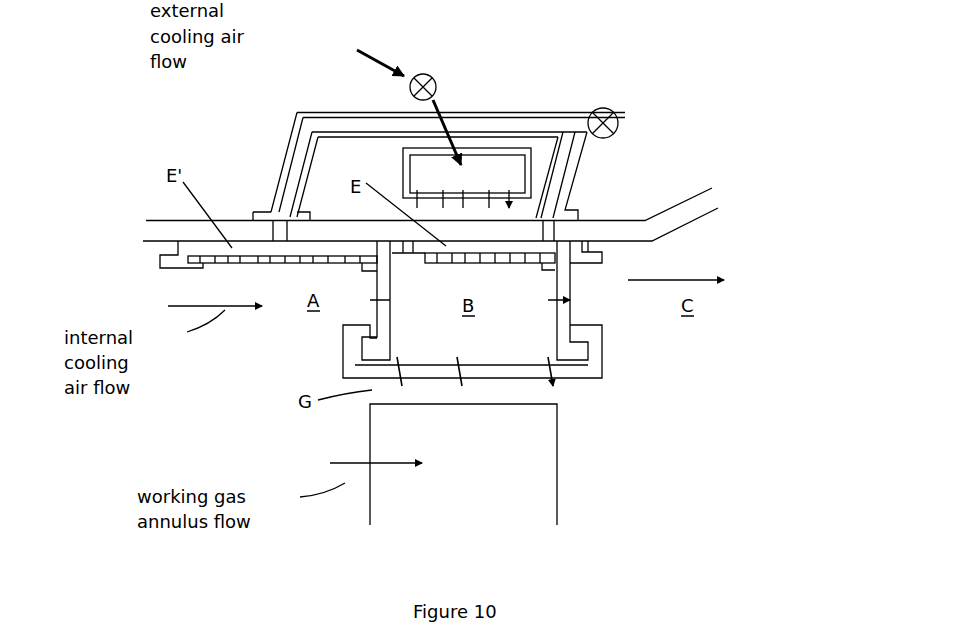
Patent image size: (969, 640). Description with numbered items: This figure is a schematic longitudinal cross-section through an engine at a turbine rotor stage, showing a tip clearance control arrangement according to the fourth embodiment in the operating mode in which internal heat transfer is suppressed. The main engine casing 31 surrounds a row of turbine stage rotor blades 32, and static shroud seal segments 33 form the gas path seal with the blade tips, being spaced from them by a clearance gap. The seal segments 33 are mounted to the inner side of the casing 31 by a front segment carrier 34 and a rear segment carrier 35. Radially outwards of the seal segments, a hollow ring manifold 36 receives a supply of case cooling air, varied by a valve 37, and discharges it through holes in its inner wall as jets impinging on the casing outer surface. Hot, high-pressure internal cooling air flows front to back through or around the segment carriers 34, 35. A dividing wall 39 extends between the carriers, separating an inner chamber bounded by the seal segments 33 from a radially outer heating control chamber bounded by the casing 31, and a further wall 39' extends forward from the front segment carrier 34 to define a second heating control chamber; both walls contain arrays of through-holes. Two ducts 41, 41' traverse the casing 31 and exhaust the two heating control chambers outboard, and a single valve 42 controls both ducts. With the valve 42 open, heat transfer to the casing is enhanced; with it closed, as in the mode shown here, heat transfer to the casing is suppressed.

The main engine casing 31 is at (177, 230).
The turbine stage rotor blades 32 is at (477, 507).
The static shroud seal segments 33 is at (568, 373).
The front segment carrier 34 is at (382, 327).
The rear segment carrier 35 is at (562, 325).
The hollow ring manifold 36 is at (530, 170).
The valve 37 is at (425, 73).
The dividing wall 39 is at (520, 281).
The wall 39' is at (225, 272).
The duct 41 is at (468, 167).
The duct 41' is at (397, 175).
The valve 42 is at (612, 108).